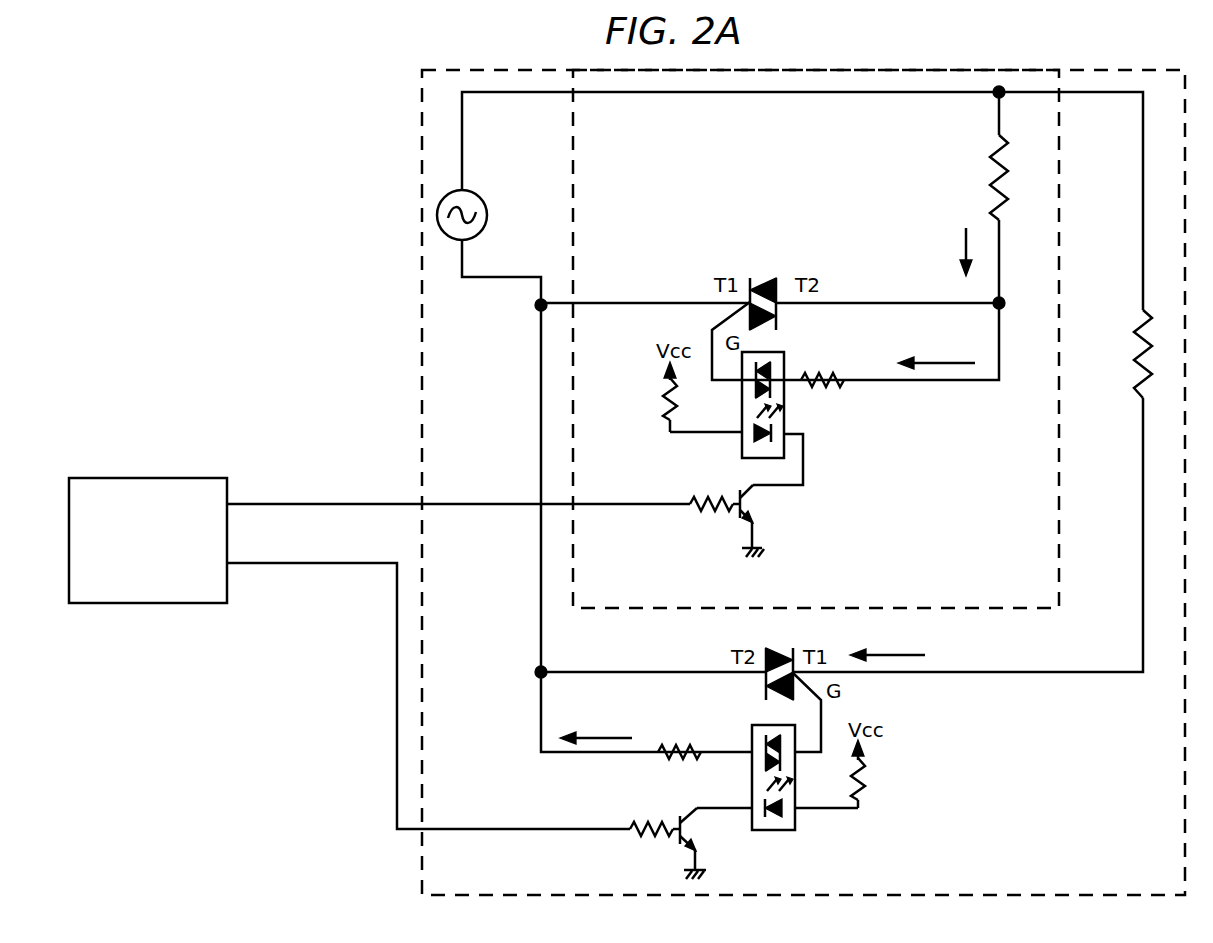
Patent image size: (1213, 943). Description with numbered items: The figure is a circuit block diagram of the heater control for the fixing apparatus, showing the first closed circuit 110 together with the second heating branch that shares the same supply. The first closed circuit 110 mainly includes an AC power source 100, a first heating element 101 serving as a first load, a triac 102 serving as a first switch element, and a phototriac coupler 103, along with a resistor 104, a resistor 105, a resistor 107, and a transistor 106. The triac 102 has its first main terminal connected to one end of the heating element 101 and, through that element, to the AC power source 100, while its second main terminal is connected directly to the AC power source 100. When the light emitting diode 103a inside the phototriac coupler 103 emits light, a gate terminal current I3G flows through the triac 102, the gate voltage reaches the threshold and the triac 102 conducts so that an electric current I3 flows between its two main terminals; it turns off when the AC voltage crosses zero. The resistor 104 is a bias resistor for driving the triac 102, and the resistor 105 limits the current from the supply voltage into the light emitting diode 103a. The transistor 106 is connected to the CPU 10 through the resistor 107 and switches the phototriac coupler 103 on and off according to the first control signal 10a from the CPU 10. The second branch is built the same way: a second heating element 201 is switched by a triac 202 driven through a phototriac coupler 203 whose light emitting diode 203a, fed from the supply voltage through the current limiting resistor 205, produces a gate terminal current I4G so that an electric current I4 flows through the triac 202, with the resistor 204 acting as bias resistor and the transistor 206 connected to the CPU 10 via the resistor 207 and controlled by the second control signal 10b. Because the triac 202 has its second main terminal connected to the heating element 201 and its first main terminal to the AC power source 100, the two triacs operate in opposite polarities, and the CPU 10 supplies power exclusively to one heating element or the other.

The CPU 10 is at (148, 478).
The first control signal 10a is at (428, 671).
The second control signal 10b is at (458, 481).
The AC power source 100 is at (480, 194).
The first closed circuit 110 is at (420, 184).
The first heating element 101 is at (1128, 360).
The triac 102 is at (776, 648).
The phototriac coupler 103 is at (778, 779).
The light emitting diode 103a is at (790, 830).
The resistor 104 is at (672, 744).
The resistor 105 is at (868, 770).
The transistor 106 is at (702, 850).
The resistor 107 is at (640, 822).
The second heating element 201 is at (983, 186).
The triac 202 is at (752, 272).
The phototriac coupler 203 is at (763, 414).
The light emitting diode 203a is at (732, 444).
The resistor 204 is at (826, 376).
The resistor 205 is at (660, 394).
The transistor 206 is at (762, 518).
The resistor 207 is at (690, 512).
The electric current I3 is at (887, 646).
The G terminal current I3G is at (596, 729).
The electric current I4 is at (951, 252).
The G terminal current I4G is at (936, 354).